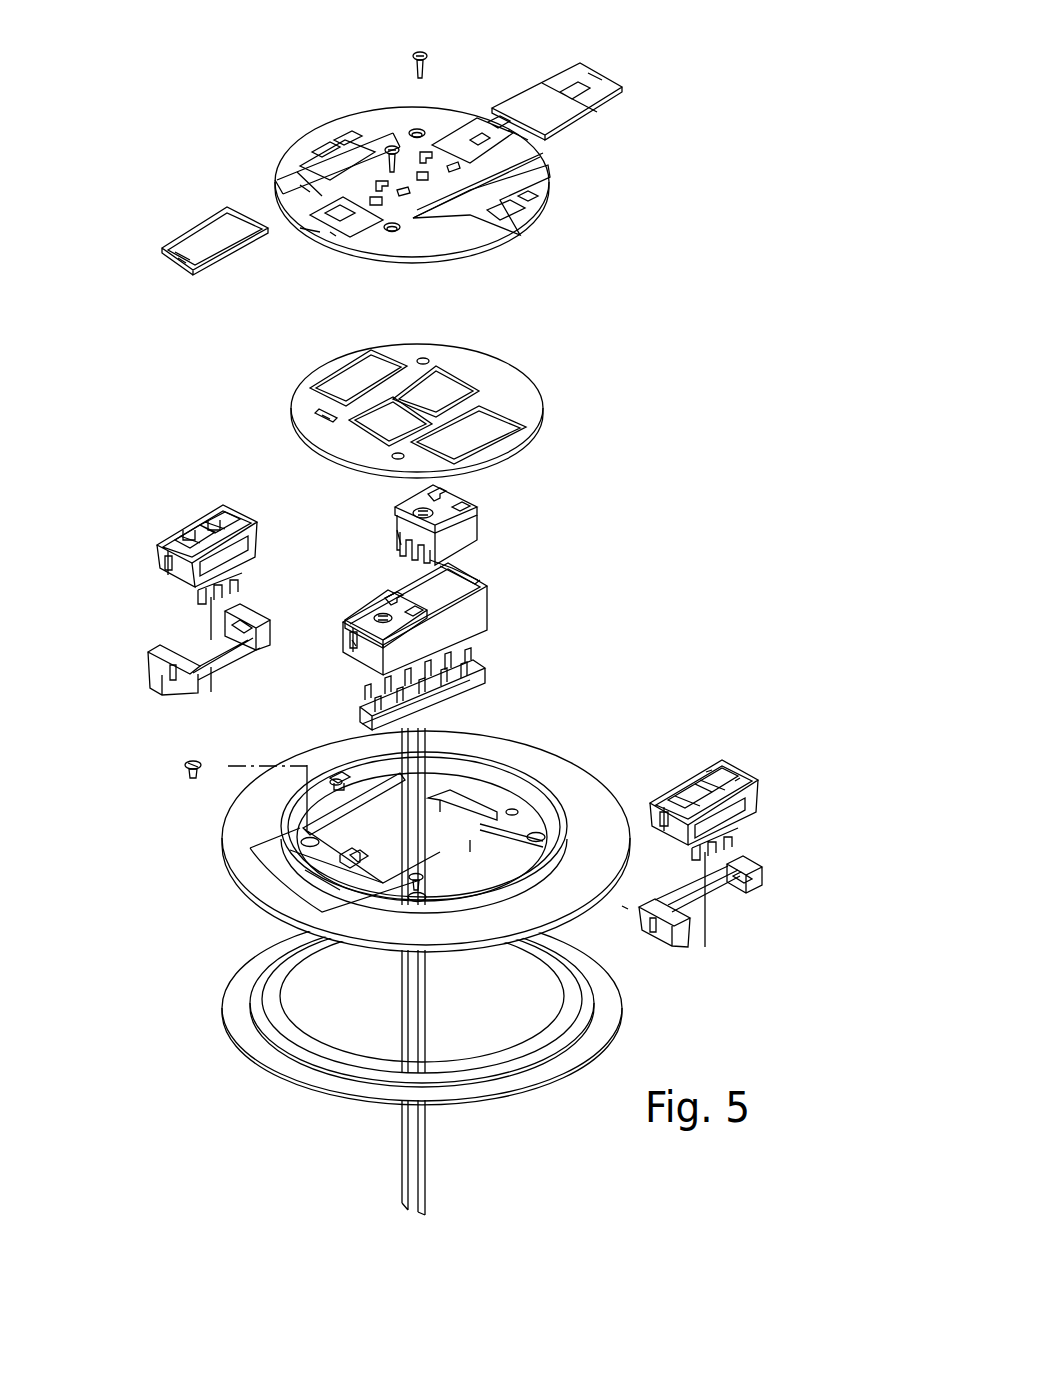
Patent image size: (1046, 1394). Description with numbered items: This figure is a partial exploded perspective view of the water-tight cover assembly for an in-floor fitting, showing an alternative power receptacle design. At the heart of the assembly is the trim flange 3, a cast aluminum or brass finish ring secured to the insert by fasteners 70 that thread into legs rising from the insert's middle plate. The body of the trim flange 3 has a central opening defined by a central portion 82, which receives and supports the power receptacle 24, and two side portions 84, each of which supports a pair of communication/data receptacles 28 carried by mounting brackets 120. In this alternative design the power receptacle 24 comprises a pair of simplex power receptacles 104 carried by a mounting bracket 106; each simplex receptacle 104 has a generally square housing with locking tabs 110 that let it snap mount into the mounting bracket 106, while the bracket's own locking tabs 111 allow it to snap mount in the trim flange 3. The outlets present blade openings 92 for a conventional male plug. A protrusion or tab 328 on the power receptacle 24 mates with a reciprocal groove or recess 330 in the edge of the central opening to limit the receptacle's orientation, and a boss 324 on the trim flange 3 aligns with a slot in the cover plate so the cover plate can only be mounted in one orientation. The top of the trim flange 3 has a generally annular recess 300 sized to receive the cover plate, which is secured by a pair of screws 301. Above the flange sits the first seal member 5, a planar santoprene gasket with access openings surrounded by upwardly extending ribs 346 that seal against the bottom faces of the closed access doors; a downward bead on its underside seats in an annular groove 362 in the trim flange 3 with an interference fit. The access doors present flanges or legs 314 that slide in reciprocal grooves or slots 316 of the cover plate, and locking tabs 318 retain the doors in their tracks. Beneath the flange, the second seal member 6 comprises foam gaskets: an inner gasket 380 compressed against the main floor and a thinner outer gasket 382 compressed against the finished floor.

The screws 301 is at (392, 145).
The flanges or legs 314 is at (548, 68).
The grooves or slots 316 is at (282, 186).
The locking tabs 318 is at (218, 258).
The first seal member 5 is at (540, 400).
The ribs 346 is at (308, 402).
The locking tabs 110 is at (397, 530).
The simplex power receptacles 104 is at (462, 528).
The blade openings 92 is at (385, 595).
The protrusion or tab 328 is at (498, 572).
The power receptacle 24 is at (538, 609).
The mounting bracket 106 is at (500, 617).
The locking tabs 111 is at (347, 640).
The trim flange 3 is at (480, 738).
The communication/data receptacles 28 is at (706, 772).
The groove or recess 330 is at (487, 817).
The boss 324 is at (340, 777).
The fasteners 70 is at (186, 766).
The side portions 84 is at (345, 833).
The annular recess 300 is at (293, 848).
The annular groove 362 is at (375, 862).
The central portion 82 is at (347, 895).
The mounting brackets 120 is at (770, 762).
The second seal member 6 is at (333, 1033).
The outer gasket 382 is at (333, 1085).
The inner gasket 380 is at (382, 1068).